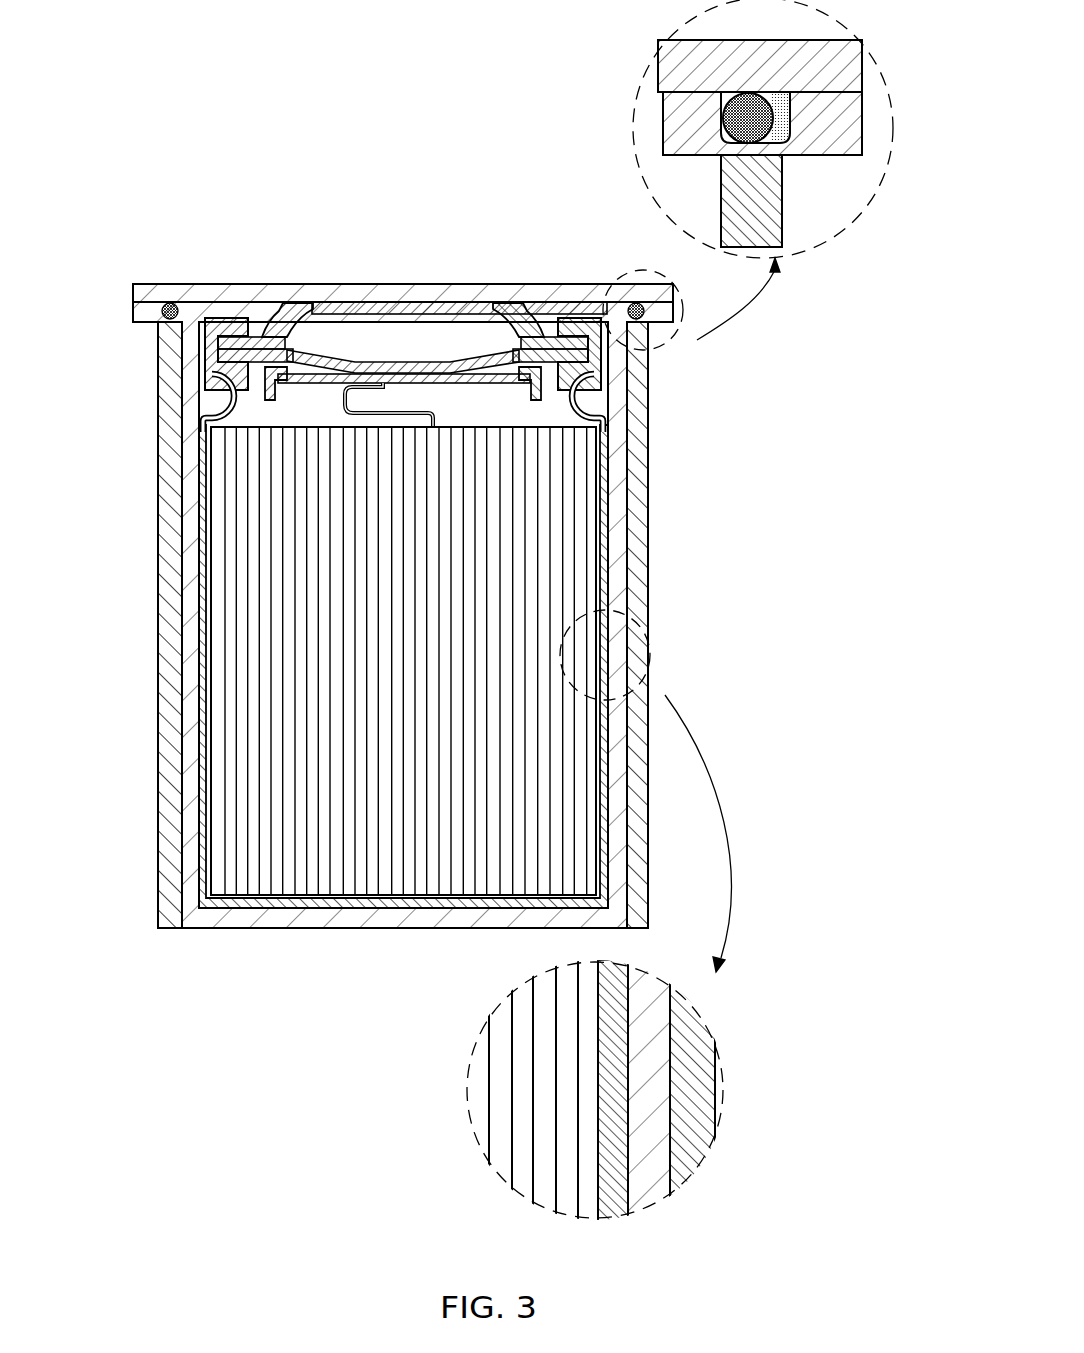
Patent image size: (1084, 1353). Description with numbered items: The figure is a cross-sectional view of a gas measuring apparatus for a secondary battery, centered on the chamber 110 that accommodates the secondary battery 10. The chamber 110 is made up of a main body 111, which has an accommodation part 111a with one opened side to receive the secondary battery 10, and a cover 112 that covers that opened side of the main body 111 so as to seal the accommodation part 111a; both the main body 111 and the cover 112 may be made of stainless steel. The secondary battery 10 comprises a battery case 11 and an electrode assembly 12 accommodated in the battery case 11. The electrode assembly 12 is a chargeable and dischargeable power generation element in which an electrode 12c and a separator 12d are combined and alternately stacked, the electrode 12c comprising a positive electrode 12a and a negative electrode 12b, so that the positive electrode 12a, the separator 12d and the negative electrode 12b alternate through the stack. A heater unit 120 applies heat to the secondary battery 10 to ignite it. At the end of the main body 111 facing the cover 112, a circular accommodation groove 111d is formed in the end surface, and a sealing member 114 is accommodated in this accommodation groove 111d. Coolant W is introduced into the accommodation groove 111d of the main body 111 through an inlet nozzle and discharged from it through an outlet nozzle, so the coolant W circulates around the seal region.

The secondary battery 10 is at (297, 297).
The battery case 11 is at (613, 1215).
The electrode assembly 12 is at (403, 833).
The positive electrode 12a is at (569, 1183).
The negative electrode 12b is at (522, 1157).
The electrode 12c is at (358, 1127).
The separator 12d is at (586, 1082).
The chamber 110 is at (408, 275).
The main body 111 is at (125, 316).
The accommodation part 111a is at (268, 322).
The accommodation groove 111d is at (792, 132).
The cover 112 is at (125, 288).
The sealing member 114 is at (722, 118).
The heater unit 120 is at (158, 603).
The coolant W is at (830, 160).